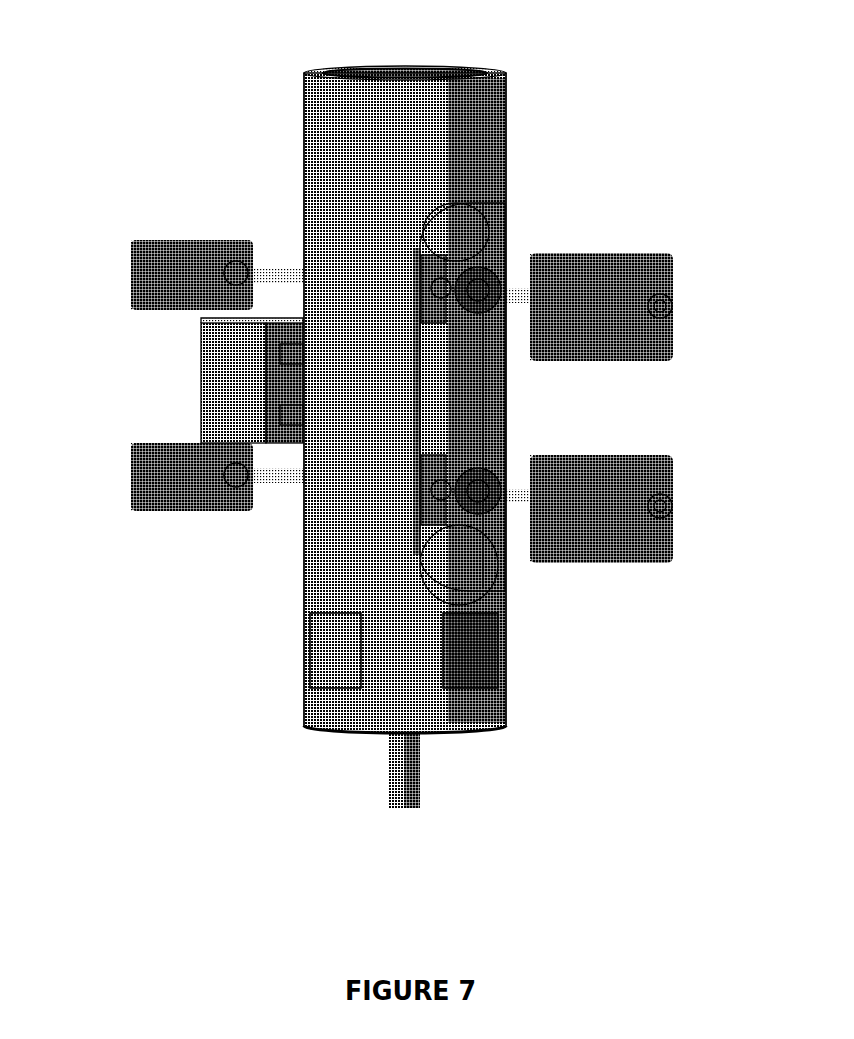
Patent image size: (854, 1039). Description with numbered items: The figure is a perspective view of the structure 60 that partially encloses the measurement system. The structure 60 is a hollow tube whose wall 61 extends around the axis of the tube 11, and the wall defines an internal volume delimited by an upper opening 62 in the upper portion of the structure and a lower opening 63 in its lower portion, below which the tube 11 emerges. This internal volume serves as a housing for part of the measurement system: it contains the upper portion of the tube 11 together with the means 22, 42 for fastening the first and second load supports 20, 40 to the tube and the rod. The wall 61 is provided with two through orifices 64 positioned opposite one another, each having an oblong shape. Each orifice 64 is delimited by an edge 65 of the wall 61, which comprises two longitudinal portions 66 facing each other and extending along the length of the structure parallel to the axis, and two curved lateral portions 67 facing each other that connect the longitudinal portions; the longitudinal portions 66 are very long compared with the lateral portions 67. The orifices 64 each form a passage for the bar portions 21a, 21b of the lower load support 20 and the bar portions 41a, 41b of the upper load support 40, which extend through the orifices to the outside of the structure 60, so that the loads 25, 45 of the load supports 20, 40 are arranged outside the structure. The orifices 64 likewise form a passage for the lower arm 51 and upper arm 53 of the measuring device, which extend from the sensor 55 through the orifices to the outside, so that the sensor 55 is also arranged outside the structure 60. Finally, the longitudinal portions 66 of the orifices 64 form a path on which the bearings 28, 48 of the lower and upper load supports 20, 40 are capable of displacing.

The tube 11 is at (397, 782).
The first load support 20 is at (406, 495).
The bar portion 21a is at (507, 488).
The bar portion 21b is at (267, 477).
The fastening means 22 is at (470, 588).
The load 25 is at (645, 475).
The bearing 28 is at (486, 467).
The second load support 40 is at (409, 289).
The bar portion 41a is at (506, 290).
The bar portion 41b is at (266, 268).
The fastening means 42 is at (462, 198).
The load 45 is at (652, 268).
The bearing 48 is at (484, 312).
The lower arm 51 is at (287, 405).
The upper arm 53 is at (287, 345).
The sensor 55 is at (205, 372).
The structure 60 is at (292, 149).
The wall 61 is at (474, 130).
The upper opening 62 is at (400, 68).
The lower opening 63 is at (350, 724).
The through orifice 64 is at (460, 405).
The edge 65 is at (496, 393).
The longitudinal portion 66 is at (490, 420).
The lateral portion 67 is at (490, 664).